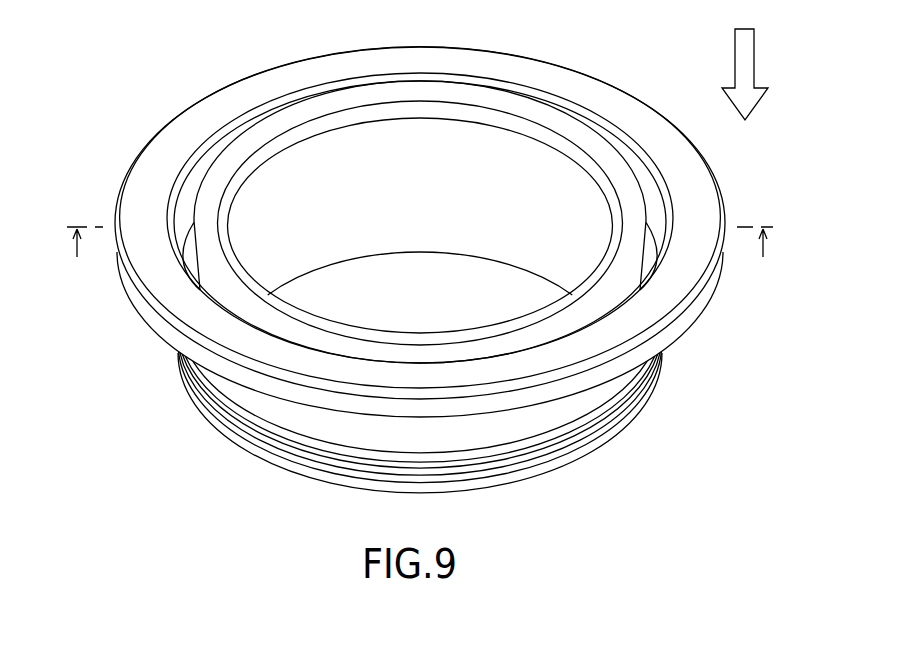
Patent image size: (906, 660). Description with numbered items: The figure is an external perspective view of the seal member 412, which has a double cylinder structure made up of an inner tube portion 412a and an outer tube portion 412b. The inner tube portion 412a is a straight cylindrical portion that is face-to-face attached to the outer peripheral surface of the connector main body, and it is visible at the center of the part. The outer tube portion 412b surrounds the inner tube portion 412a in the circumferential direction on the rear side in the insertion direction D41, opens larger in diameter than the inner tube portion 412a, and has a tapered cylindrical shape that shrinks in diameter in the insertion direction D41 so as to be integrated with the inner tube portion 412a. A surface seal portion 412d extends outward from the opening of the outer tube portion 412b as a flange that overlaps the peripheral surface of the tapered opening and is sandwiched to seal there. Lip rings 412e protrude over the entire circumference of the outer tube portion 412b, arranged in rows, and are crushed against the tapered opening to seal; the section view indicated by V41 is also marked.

The seal member 412 is at (425, 253).
The inner tube portion 412a is at (428, 93).
The outer tube portion 412b is at (610, 390).
The surface seal portion 412d is at (230, 97).
The lip ring 412e is at (538, 450).
The insertion direction D41 is at (735, 57).
The section view direction V41 is at (424, 257).